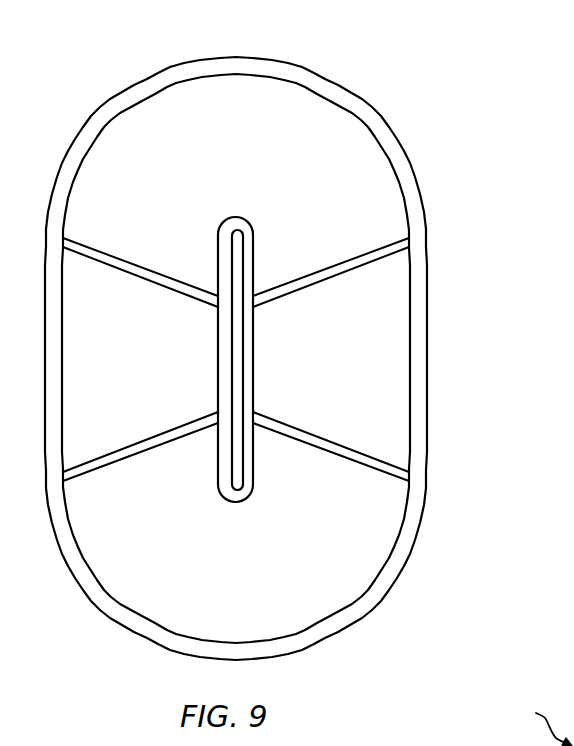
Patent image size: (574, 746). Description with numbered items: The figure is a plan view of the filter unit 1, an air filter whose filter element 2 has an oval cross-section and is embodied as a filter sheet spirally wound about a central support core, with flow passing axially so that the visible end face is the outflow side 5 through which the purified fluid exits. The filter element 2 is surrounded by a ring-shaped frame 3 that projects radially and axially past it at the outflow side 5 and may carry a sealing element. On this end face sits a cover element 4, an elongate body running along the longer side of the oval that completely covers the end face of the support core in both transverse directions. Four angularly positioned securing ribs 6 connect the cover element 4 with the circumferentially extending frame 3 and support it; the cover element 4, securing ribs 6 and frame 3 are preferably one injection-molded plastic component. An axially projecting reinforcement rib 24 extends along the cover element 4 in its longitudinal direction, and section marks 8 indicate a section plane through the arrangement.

The filter unit 1 is at (134, 56).
The filter element 2 is at (287, 108).
The frame 3 is at (375, 127).
The cover element 4 is at (250, 400).
The outflow side 5 is at (136, 140).
The securing ribs 6 is at (352, 258).
The section line 8 is at (288, 365).
The reinforcement rib 24 is at (236, 250).